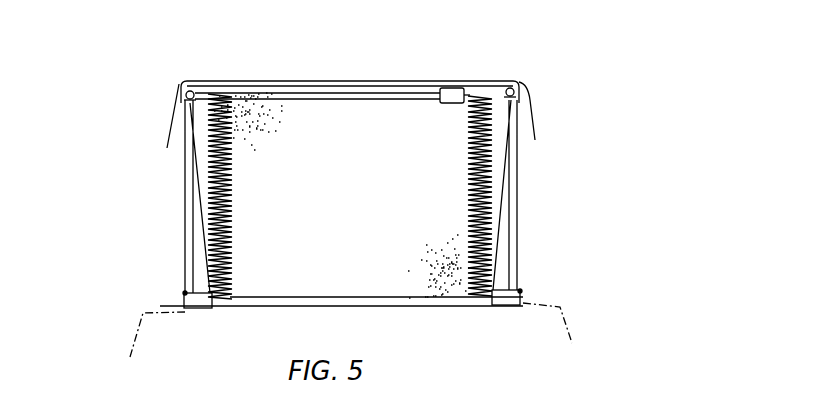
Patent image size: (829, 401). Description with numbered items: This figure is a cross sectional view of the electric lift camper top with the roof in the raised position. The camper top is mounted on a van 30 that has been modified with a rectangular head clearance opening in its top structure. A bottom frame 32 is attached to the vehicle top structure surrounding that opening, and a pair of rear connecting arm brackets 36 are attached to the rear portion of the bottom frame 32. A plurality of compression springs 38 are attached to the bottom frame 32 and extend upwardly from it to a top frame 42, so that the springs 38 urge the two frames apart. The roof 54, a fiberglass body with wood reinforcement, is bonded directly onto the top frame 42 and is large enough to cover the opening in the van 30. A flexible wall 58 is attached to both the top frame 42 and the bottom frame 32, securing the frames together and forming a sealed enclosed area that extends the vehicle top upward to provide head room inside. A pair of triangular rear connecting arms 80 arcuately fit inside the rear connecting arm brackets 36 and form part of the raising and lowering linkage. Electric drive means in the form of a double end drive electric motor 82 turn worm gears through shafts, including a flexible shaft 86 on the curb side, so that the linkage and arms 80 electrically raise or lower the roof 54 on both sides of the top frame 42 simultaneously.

The van 30 is at (573, 343).
The bottom frame 32 is at (443, 308).
The rear connecting arm brackets 36 is at (188, 310).
The compression springs 38 is at (200, 168).
The top frame 42 is at (447, 80).
The roof 54 is at (537, 120).
The flexible wall 58 is at (283, 103).
The rear connecting arms 80 is at (185, 258).
The electric motor 82 is at (460, 92).
The flexible shaft 86 is at (383, 94).